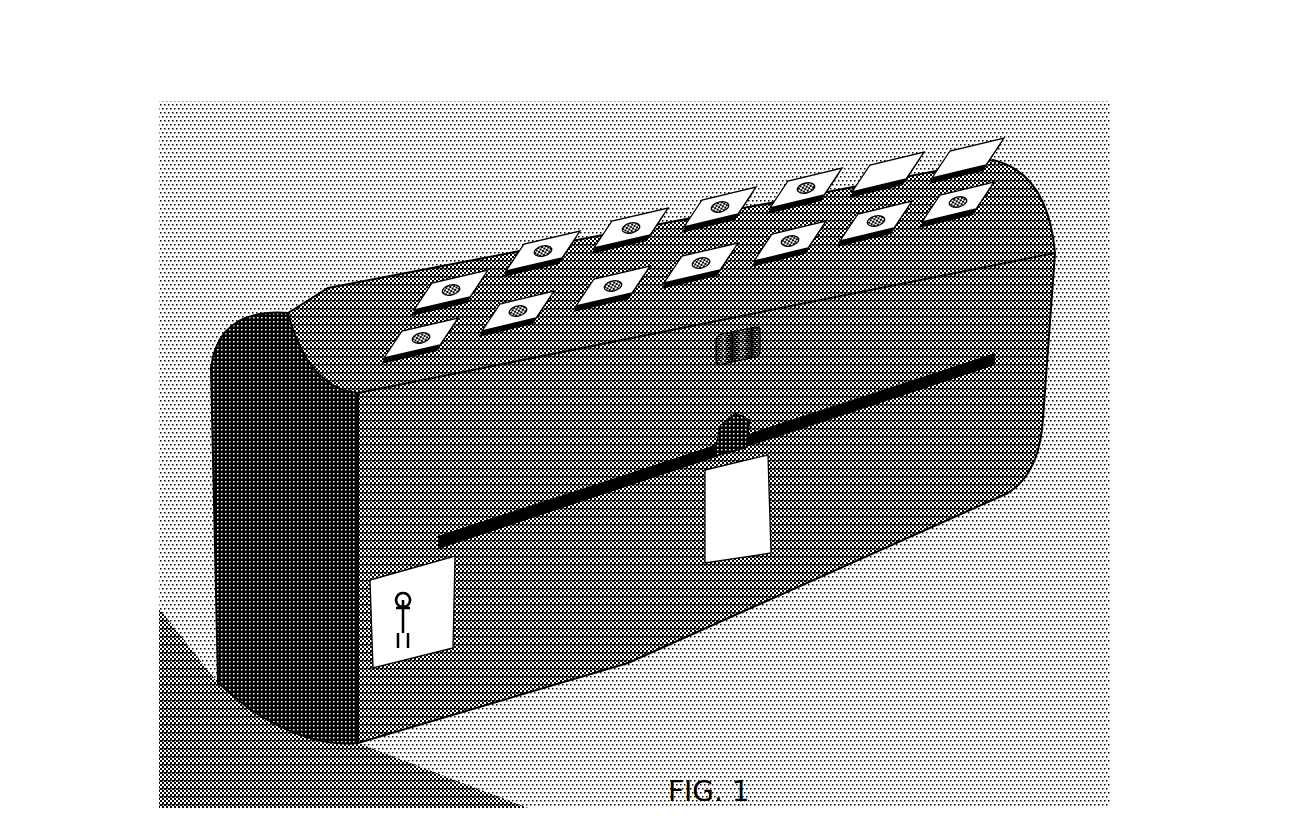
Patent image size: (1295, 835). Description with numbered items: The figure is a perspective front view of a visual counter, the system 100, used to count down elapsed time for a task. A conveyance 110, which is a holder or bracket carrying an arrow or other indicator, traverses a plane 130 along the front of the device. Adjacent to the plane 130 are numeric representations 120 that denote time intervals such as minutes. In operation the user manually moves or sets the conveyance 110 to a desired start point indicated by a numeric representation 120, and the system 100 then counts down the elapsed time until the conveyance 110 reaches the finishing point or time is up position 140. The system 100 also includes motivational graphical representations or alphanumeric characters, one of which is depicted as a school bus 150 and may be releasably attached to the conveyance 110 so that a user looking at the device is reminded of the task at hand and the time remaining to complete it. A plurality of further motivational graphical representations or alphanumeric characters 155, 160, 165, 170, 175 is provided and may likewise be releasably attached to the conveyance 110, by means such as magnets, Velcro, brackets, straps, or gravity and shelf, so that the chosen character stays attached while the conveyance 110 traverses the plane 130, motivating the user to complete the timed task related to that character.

The system 100 is at (708, 440).
The conveyance 110 is at (728, 448).
The numeric representations 120 is at (1020, 275).
The plane 130 is at (968, 360).
The time is up position 140 is at (410, 494).
The motivational graphical representation 150 is at (738, 530).
The motivational graphical representation 155 is at (443, 282).
The motivational graphical representation 160 is at (533, 240).
The motivational graphical representation 165 is at (615, 225).
The motivational graphical representation 170 is at (708, 205).
The motivational graphical representation 175 is at (780, 195).